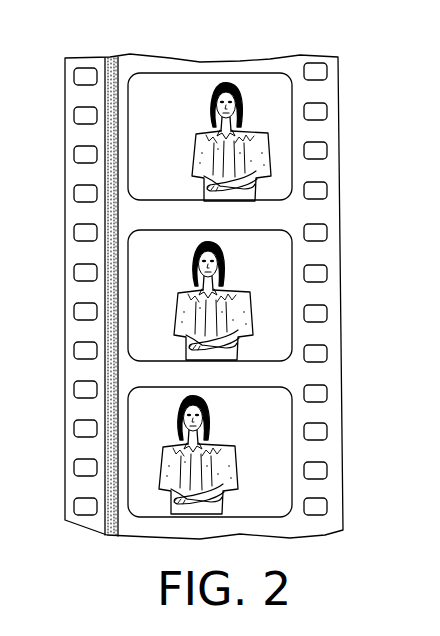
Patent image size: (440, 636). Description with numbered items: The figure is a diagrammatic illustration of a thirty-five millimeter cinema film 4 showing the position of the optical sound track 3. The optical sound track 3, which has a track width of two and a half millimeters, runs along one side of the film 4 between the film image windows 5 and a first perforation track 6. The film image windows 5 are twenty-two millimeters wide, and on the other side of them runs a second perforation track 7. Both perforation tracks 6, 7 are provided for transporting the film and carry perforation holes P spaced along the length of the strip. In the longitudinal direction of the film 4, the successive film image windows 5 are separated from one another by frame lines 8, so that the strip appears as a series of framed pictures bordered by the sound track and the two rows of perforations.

The optical sound track 3 is at (112, 60).
The 35 mm cinema film 4 is at (65, 285).
The film image windows 5 is at (248, 82).
The first perforation track 6 is at (85, 265).
The second perforation track 7 is at (351, 265).
The frame lines 8 is at (260, 213).
The perforation holes P is at (317, 112).